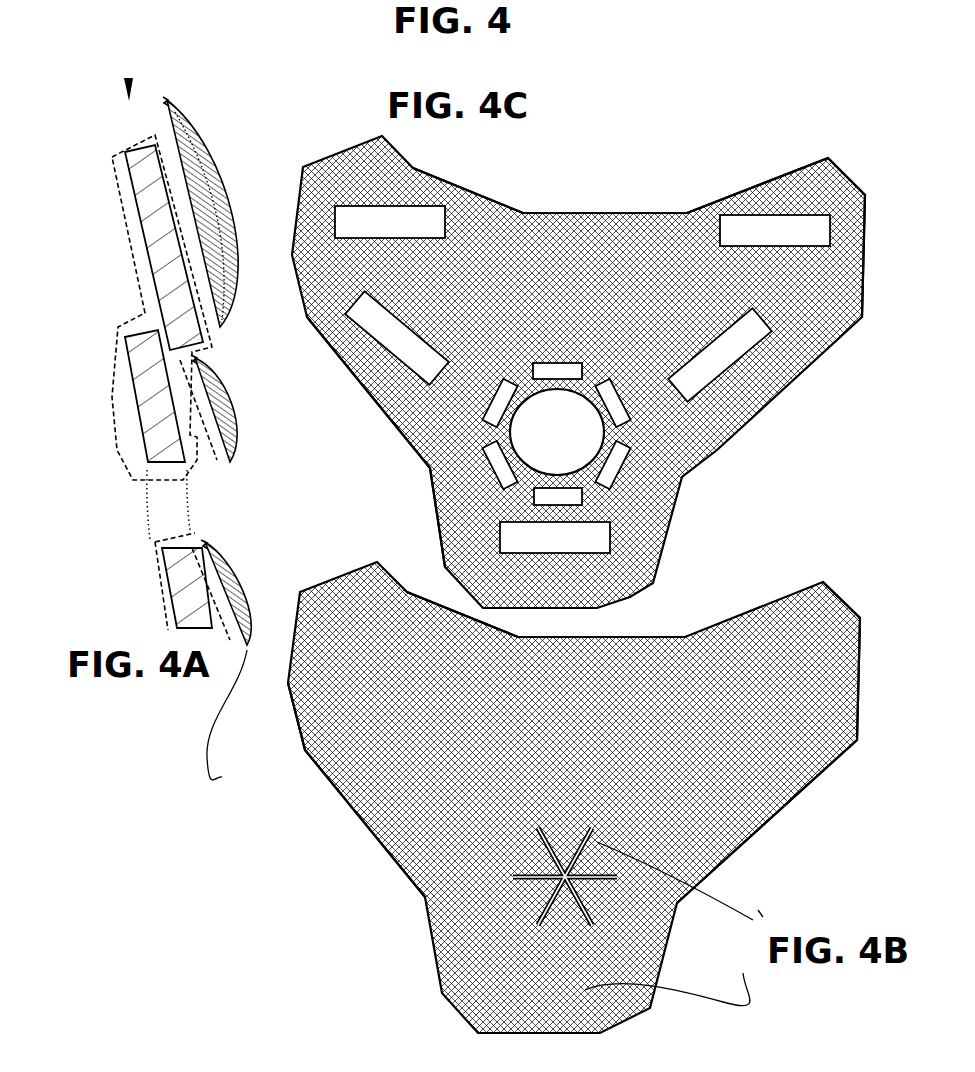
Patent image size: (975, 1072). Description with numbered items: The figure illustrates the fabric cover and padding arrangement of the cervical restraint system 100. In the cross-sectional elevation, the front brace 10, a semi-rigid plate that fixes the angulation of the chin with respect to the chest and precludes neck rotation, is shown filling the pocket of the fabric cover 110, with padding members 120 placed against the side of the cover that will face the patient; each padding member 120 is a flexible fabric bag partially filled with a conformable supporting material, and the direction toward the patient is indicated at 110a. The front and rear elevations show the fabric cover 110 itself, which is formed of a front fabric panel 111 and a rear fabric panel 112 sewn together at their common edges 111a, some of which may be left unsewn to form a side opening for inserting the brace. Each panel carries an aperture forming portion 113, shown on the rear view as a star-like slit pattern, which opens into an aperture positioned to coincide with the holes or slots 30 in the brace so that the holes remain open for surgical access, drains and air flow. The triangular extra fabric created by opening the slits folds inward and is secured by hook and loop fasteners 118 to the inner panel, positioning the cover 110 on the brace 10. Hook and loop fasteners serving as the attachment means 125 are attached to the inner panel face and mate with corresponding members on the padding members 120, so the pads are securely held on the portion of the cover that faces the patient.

In FIG. 4A, the front brace 10 is at (153, 227).
In FIG. 4C, the front brace 10 is at (612, 232).
In FIG. 4A, the holes or slots 30 is at (157, 513).
In FIG. 4A, the cervical restraint system 100 is at (140, 127).
In FIG. 4A, the fabric cover 110 is at (102, 427).
In FIG. 4A, the frame direction 110a is at (129, 78).
In FIG. 4C, the front fabric panel 111 is at (820, 160).
In FIG. 4C, the common edges 111a is at (555, 205).
In FIG. 4B, the common edges 111a is at (370, 813).
In FIG. 4B, the rear fabric panel 112 is at (788, 817).
In FIG. 4A, the aperture forming portion 113 is at (177, 497).
In FIG. 4C, the aperture forming portion 113 is at (500, 452).
In FIG. 4B, the aperture forming portion 113 is at (515, 883).
In FIG. 4C, the hook and loop fasteners 118 is at (630, 450).
In FIG. 4A, the padding member 120 is at (183, 137).
In FIG. 4C, the attachment means 125 is at (730, 350).